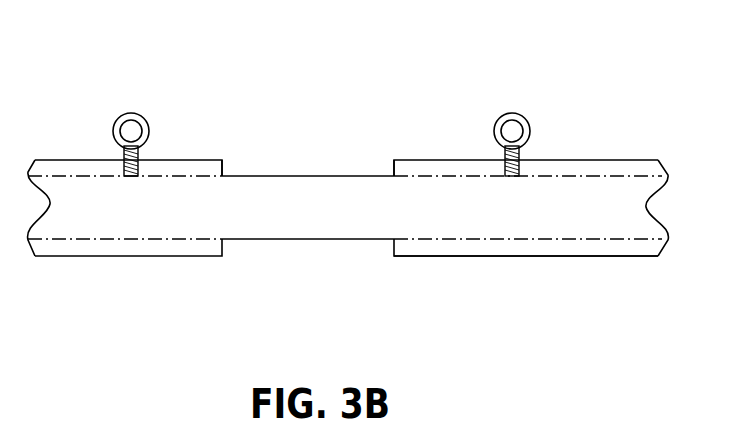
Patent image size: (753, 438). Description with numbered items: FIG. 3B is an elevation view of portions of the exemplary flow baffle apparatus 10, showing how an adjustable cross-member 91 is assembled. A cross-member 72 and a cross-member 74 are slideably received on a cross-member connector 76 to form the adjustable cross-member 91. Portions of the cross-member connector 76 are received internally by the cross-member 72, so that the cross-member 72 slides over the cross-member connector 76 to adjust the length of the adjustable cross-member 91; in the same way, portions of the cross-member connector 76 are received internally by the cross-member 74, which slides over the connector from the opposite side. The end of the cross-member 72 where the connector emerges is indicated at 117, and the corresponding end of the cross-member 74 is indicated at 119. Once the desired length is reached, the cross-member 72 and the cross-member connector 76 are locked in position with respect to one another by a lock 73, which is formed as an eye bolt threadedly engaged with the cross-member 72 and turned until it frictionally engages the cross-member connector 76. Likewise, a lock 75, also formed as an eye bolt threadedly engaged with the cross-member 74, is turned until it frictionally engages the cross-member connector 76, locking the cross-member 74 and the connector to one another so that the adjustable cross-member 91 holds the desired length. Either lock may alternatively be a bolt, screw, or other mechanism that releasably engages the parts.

The flow baffle apparatus 10 is at (617, 65).
The cross-member 72 is at (165, 160).
The lock 73 is at (132, 118).
The cross-member 74 is at (438, 160).
The lock 75 is at (518, 115).
The cross-member connector 76 is at (295, 241).
The adjustable cross-member 91 is at (467, 240).
The first sleeve end edge 117 is at (222, 160).
The second sleeve end edge 119 is at (390, 160).